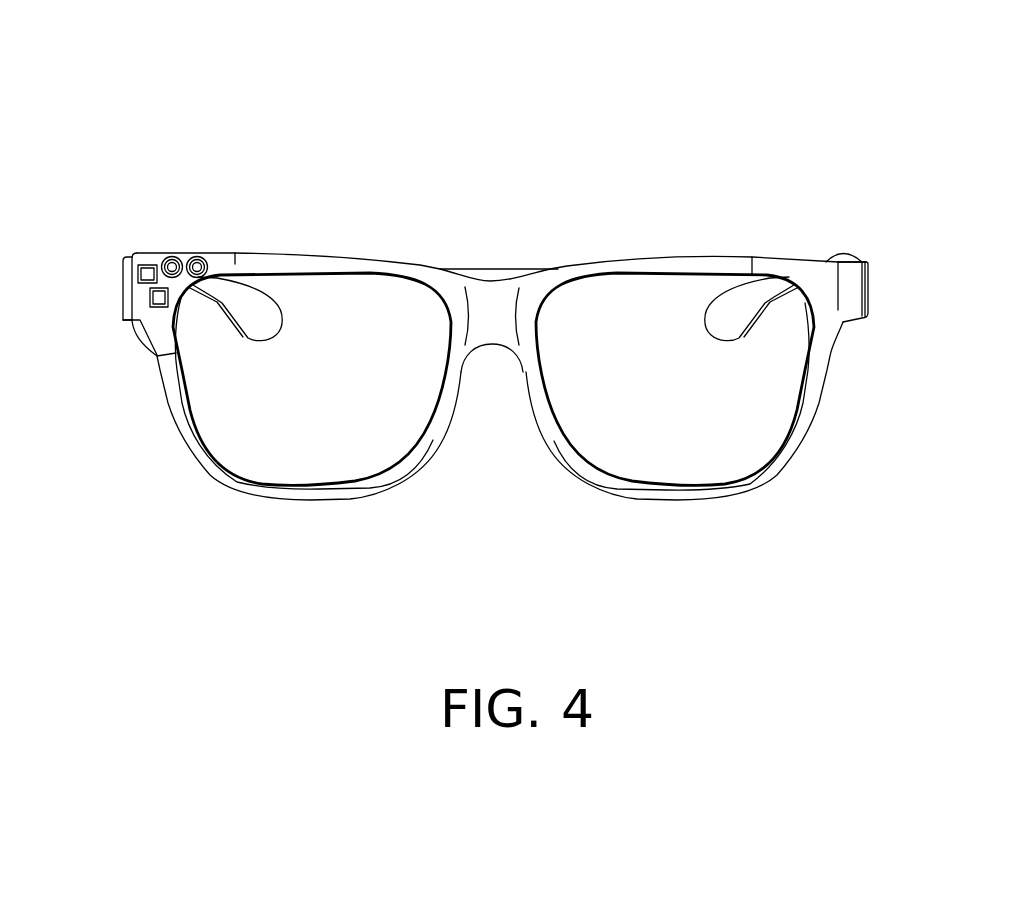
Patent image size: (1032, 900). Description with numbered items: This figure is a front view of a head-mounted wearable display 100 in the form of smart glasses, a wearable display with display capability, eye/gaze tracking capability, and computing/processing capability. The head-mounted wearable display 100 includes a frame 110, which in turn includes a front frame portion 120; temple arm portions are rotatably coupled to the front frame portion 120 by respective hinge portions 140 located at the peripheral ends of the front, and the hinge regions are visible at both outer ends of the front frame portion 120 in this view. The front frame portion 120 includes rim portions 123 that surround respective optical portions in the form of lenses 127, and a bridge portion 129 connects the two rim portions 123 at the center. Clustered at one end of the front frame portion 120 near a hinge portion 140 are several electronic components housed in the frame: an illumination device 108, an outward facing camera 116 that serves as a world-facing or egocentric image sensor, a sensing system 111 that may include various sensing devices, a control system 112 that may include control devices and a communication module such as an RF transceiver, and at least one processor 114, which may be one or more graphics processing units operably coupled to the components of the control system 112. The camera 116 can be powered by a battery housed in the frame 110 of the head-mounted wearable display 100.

The head-mounted wearable display 100 is at (264, 60).
The illumination device 108 is at (199, 256).
The frame 110 is at (858, 337).
The sensing system 111 is at (150, 297).
The control system 112 is at (143, 266).
The processor 114 is at (149, 265).
The camera 116 is at (173, 256).
The front frame portion 120 is at (734, 253).
The rim portions 123 is at (222, 477).
The lenses 127 is at (273, 462).
The bridge portion 129 is at (490, 300).
The hinge portions 140 is at (105, 266).